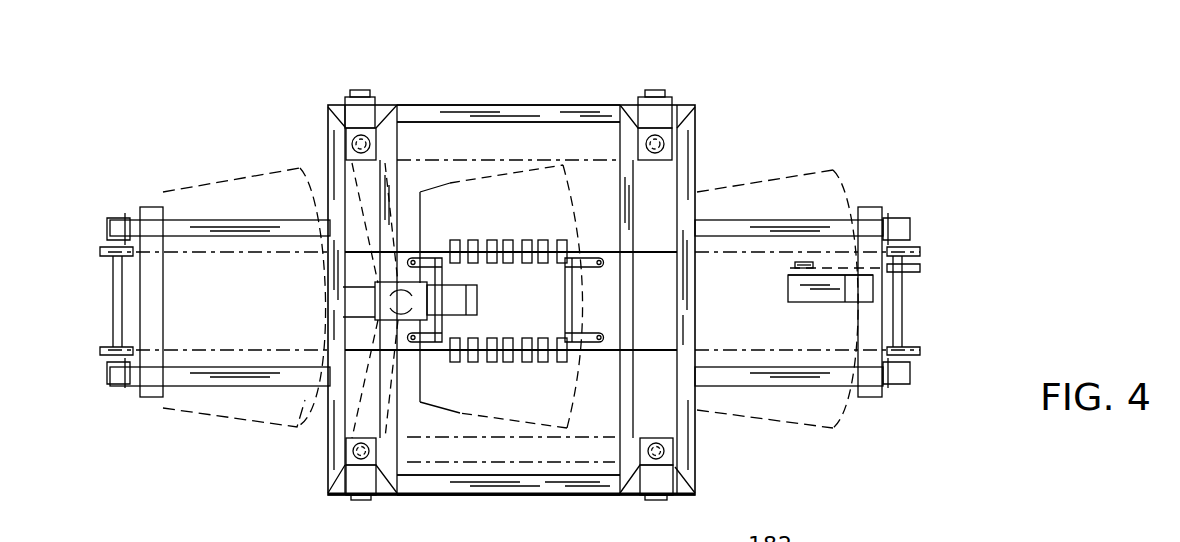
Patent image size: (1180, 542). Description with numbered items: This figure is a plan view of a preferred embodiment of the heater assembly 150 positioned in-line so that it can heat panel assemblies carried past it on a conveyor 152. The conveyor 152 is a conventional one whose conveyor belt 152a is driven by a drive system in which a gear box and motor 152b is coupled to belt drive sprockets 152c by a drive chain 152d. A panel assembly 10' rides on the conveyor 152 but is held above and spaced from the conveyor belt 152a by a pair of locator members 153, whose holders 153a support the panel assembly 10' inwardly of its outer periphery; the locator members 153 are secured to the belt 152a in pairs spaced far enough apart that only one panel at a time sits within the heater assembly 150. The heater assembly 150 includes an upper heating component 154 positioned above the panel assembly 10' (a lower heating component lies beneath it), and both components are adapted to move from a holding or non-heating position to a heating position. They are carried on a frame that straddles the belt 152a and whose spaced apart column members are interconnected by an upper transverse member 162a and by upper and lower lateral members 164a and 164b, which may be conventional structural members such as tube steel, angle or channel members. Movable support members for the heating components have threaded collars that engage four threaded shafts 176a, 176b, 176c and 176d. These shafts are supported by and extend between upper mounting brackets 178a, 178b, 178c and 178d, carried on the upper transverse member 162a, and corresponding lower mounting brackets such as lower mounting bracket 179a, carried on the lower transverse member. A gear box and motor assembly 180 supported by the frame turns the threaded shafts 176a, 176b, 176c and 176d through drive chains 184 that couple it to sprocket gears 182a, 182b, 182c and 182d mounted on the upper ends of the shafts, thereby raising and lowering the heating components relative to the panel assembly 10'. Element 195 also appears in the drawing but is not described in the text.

The panel assembly 10' is at (498, 236).
The heater assembly 150 is at (707, 104).
The conveyor 152 is at (900, 206).
The conveyor belt 152a is at (716, 258).
The gear box and motor 152b is at (791, 308).
The belt drive sprockets 152c is at (920, 268).
The drive chain 152d is at (873, 270).
The locator members 153 is at (603, 258).
The holders 153a is at (524, 240).
The upper heating component 154 is at (489, 537).
The upper transverse member 162a is at (468, 105).
The upper lateral member 164a is at (335, 430).
The lower lateral member 164b is at (693, 170).
The threaded shaft 176a is at (408, 103).
The threaded shaft 176b is at (632, 127).
The threaded shaft 176c is at (392, 466).
The threaded shaft 176d is at (645, 450).
The upper mounting bracket 178a is at (378, 97).
The upper mounting bracket 178b is at (680, 100).
The upper mounting bracket 178c is at (346, 499).
The upper mounting bracket 178d is at (645, 506).
The lower mounting bracket 179a is at (335, 150).
The gear box and motor assembly 180 is at (344, 329).
The sprocket gear 182a is at (345, 140).
The sprocket gear 182b is at (703, 130).
The sprocket gear 182c is at (345, 463).
The sprocket gear 182d is at (698, 488).
The drive chains 184 is at (593, 435).
The base 195 is at (587, 536).